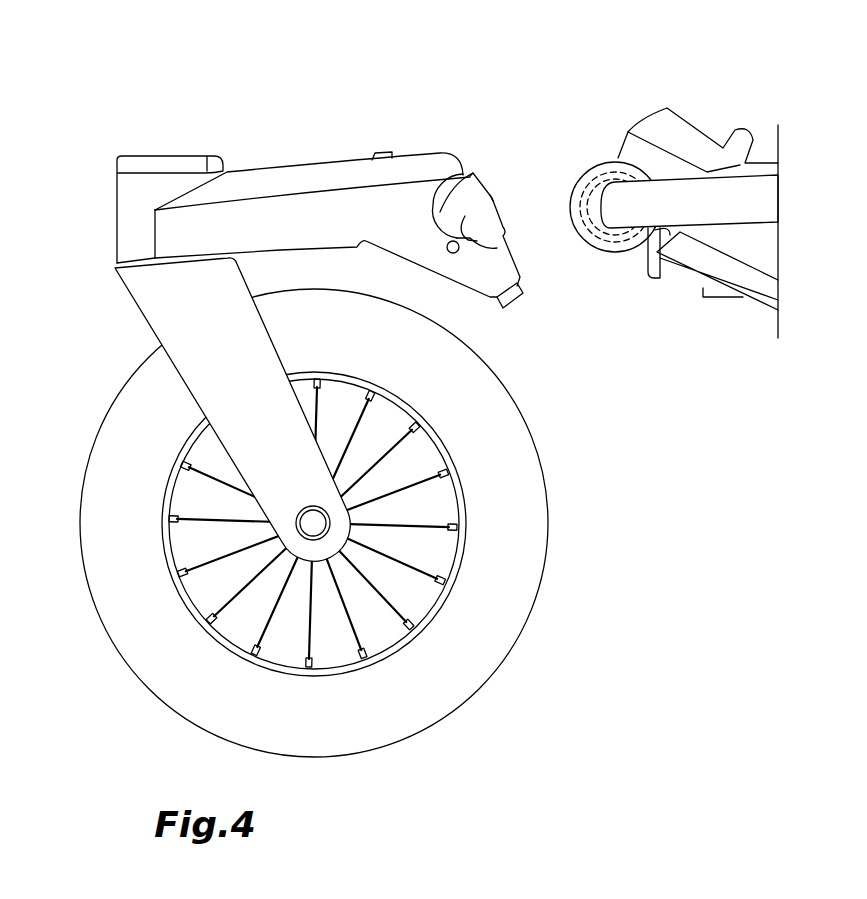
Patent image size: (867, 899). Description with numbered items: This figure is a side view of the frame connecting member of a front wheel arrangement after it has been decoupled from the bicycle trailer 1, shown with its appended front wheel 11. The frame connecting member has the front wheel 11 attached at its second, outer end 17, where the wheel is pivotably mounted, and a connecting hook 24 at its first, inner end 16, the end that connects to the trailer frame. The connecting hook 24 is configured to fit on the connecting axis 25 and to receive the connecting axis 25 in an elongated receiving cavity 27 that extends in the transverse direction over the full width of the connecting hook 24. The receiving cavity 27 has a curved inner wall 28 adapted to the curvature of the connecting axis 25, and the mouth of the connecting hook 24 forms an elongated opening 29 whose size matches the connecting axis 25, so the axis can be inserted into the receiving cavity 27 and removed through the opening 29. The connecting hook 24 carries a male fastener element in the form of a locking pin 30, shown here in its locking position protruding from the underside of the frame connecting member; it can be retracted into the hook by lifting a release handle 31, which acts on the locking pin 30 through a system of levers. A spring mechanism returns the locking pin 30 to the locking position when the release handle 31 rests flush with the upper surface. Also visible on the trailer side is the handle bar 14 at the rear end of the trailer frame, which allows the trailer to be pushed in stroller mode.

The bicycle trailer 1 is at (658, 65).
The front wheel 11 is at (502, 482).
The handle bar 14 is at (288, 178).
The inner end 16 is at (489, 108).
The outer end 17 is at (96, 213).
The connecting hook 24 is at (450, 275).
The connecting axis 25 is at (588, 190).
The receiving cavity 27 is at (497, 248).
The curved inner wall 28 is at (463, 176).
The elongated opening 29 is at (492, 199).
The locking pin 30 is at (518, 300).
The release handle 31 is at (380, 157).